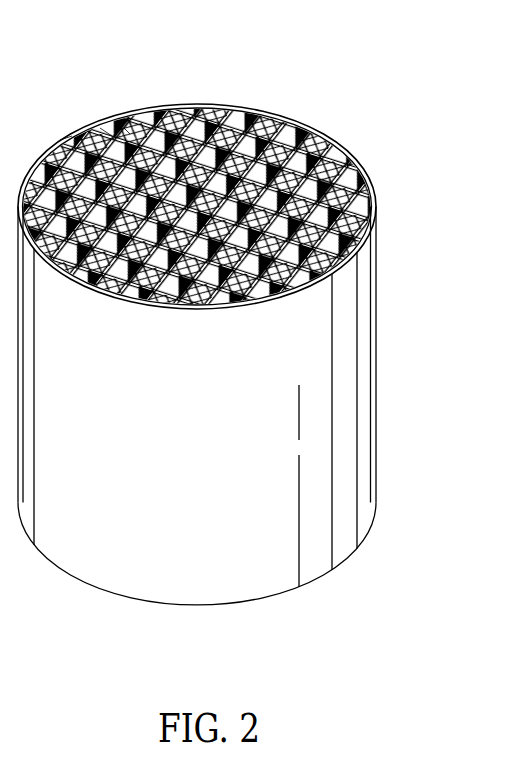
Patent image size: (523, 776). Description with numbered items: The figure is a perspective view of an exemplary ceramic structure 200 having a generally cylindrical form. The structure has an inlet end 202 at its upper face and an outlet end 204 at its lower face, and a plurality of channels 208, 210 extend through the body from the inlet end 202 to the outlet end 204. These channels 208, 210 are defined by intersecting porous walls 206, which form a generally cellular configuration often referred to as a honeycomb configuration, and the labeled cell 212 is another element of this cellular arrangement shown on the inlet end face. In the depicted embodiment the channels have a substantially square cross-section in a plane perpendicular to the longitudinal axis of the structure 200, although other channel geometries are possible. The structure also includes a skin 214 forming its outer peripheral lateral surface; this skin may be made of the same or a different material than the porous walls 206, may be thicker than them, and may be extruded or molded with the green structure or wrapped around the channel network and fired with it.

The ceramic structure 200 is at (245, 328).
The inlet end 202 is at (353, 157).
The outlet end 204 is at (308, 585).
The porous walls 206 is at (283, 127).
The channel 208 is at (105, 130).
The channel 210 is at (65, 138).
The open cell channel 212 is at (127, 130).
The skin 214 is at (378, 362).